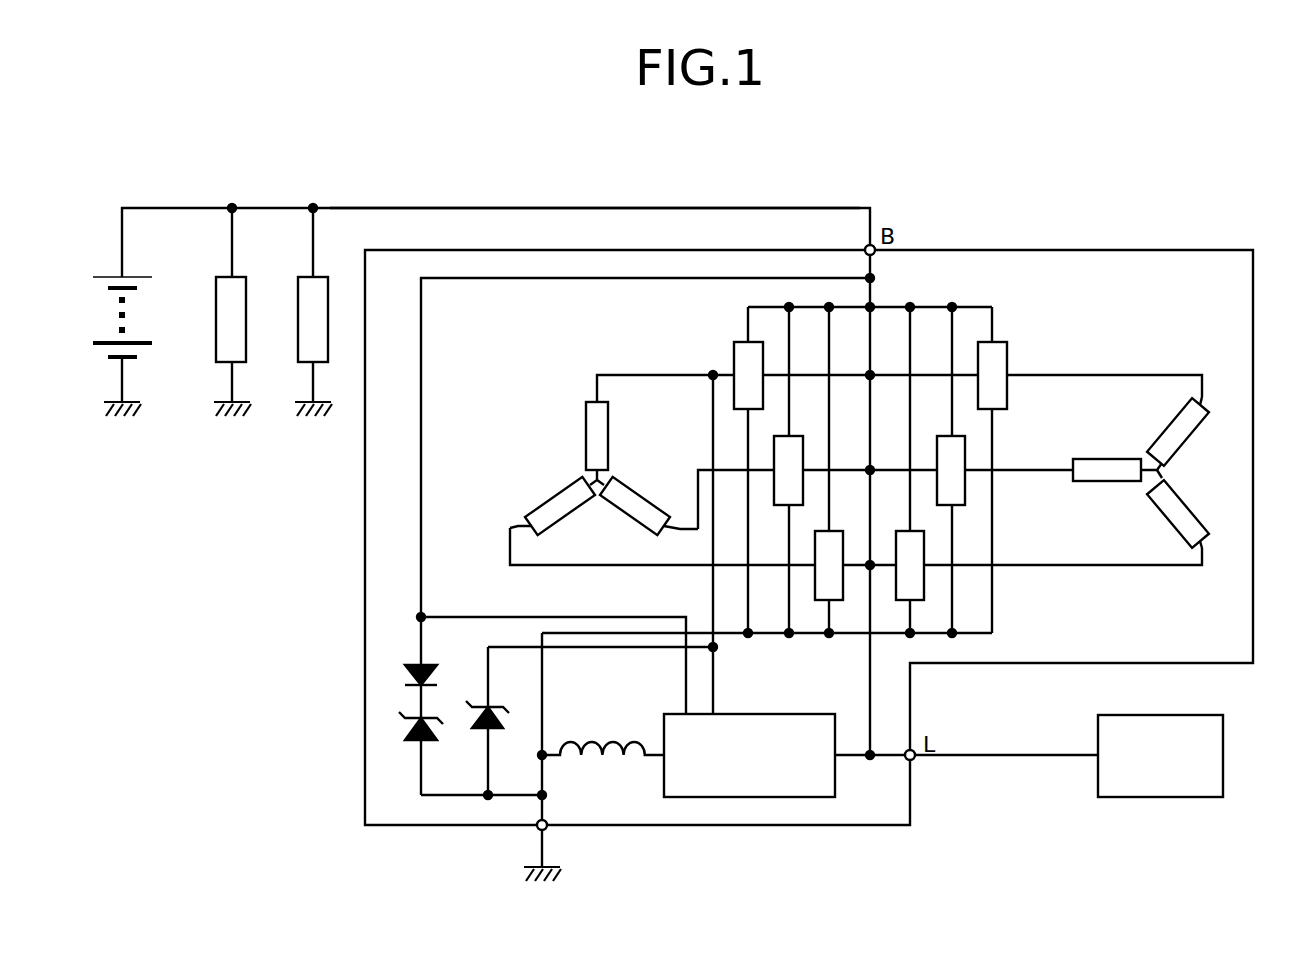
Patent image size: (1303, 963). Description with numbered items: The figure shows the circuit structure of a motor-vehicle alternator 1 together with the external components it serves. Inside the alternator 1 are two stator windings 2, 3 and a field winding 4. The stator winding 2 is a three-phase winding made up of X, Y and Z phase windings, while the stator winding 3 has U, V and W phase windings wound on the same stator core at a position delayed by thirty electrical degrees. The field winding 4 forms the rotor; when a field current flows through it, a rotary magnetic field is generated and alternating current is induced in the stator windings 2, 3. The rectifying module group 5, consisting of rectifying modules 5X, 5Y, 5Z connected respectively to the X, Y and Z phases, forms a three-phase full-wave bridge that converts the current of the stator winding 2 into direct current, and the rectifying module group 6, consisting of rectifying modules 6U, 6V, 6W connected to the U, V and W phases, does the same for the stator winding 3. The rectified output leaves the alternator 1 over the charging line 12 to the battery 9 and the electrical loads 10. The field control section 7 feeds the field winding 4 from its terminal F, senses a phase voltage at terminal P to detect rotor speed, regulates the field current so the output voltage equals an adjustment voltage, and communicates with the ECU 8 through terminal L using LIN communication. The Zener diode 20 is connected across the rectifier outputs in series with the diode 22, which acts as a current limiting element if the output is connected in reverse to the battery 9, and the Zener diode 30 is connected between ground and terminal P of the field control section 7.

The alternator 1 is at (1218, 250).
The stator winding 2 is at (578, 470).
The stator winding 3 is at (1148, 458).
The field winding 4 is at (603, 740).
The rectifying module group 5 is at (687, 446).
The rectifying module 5X is at (742, 342).
The rectifying module 5Y is at (815, 573).
The rectifying module 5Z is at (773, 451).
The rectifying module group 6 is at (1054, 446).
The rectifying module 6U is at (998, 342).
The rectifying module 6V is at (965, 450).
The rectifying module 6W is at (925, 572).
The field control section 7 is at (760, 714).
The ECU 8 is at (1226, 766).
The battery 9 is at (110, 277).
The electrical loads 10 is at (216, 349).
The charging line 12 is at (528, 208).
The Zener diode 20 is at (405, 735).
The diode 22 is at (405, 670).
The Zener diode 30 is at (485, 730).